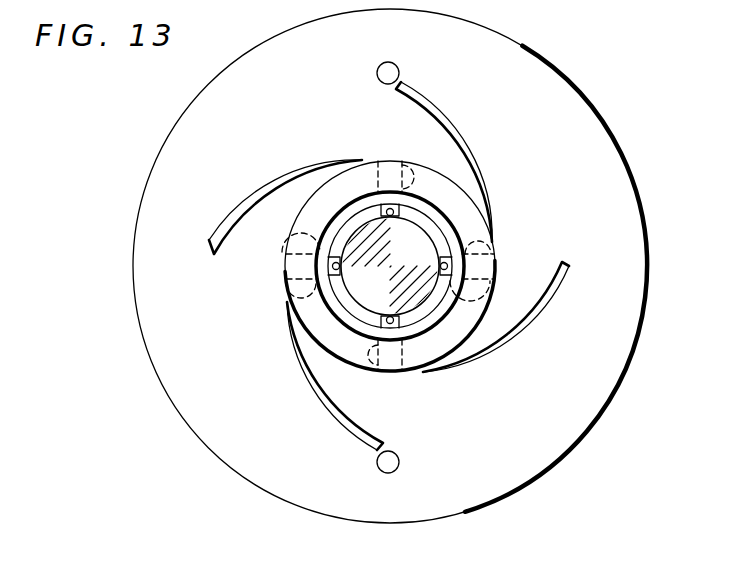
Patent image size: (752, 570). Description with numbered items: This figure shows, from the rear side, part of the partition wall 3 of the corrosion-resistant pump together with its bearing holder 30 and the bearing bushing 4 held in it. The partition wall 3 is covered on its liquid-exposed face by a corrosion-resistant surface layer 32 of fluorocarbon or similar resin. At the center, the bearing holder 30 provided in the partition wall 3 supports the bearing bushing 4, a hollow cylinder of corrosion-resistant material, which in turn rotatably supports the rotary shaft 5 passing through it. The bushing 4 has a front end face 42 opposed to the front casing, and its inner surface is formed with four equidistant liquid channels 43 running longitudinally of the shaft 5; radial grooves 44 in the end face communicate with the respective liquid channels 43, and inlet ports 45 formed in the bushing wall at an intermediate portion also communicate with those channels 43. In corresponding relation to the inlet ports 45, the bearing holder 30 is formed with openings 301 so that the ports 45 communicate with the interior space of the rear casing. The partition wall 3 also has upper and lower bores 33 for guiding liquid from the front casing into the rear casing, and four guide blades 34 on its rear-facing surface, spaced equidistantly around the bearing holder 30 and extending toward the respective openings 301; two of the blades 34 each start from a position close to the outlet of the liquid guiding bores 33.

The partition wall 3 is at (530, 36).
The bearing holder 30 is at (400, 160).
The openings 301 is at (385, 383).
The surface layer 32 is at (612, 159).
The bores 33 is at (395, 64).
The guide blades 34 is at (440, 103).
The bearing bushing 4 is at (447, 316).
The front end face 42 is at (438, 205).
The liquid channels 43 is at (448, 243).
The radial grooves 44 is at (452, 262).
The inlet ports 45 is at (494, 283).
The rotary shaft 5 is at (362, 214).